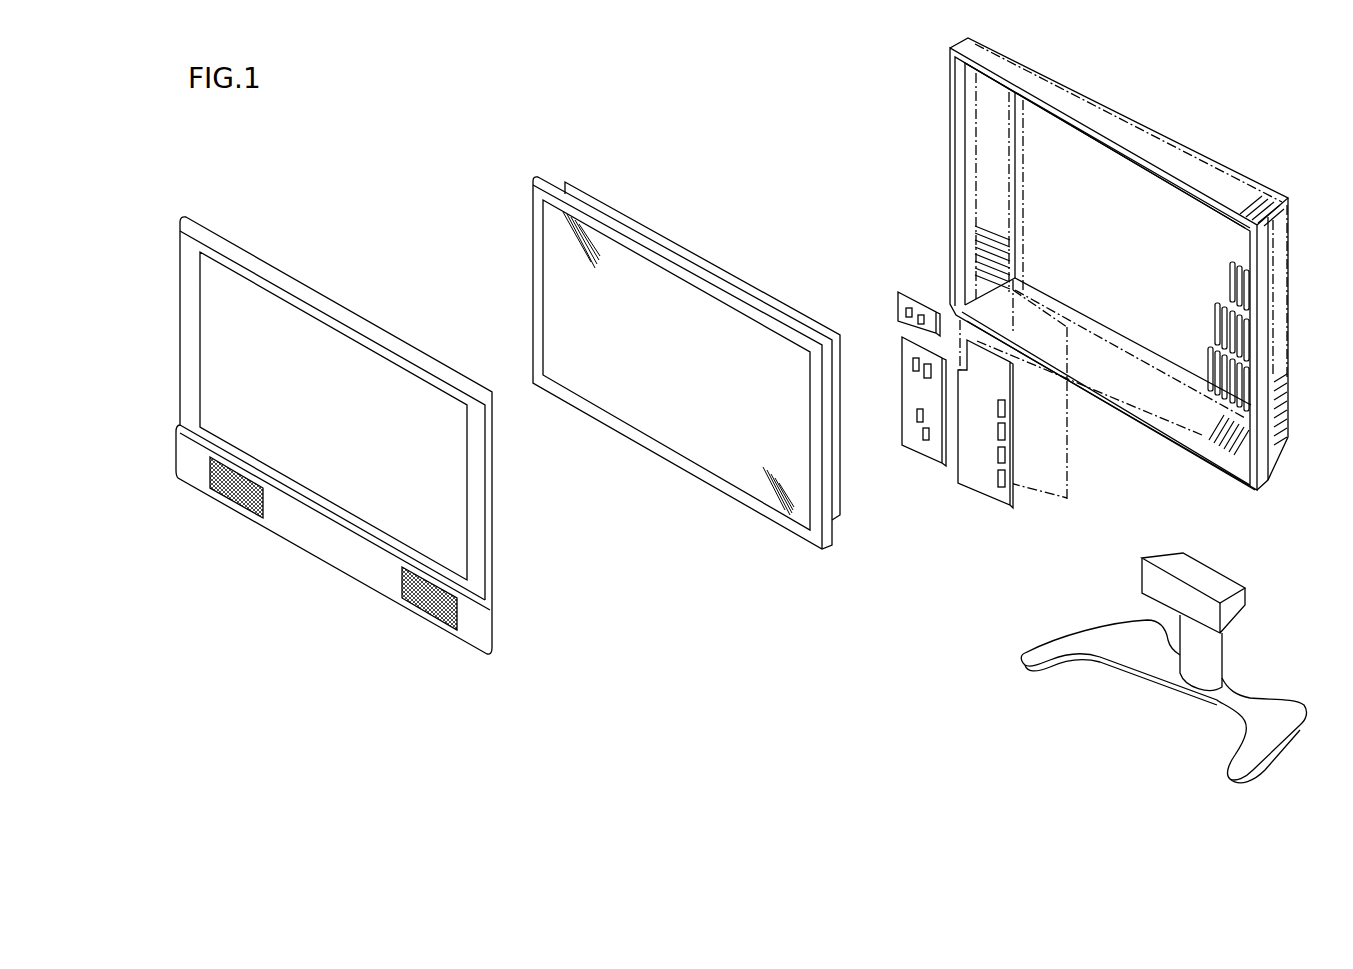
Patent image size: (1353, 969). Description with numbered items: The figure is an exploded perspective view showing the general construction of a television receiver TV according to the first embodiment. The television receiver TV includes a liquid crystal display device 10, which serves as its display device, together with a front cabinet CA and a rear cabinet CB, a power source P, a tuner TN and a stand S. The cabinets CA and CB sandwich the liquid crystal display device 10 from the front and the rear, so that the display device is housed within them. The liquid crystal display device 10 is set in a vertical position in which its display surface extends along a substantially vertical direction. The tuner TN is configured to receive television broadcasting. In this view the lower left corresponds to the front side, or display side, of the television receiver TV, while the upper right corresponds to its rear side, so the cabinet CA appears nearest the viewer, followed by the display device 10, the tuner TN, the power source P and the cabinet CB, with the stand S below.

The television receiver TV is at (709, 121).
The cabinet CA is at (318, 290).
The liquid crystal display device 10 is at (637, 217).
The cabinet CB is at (1115, 108).
The tuner TN is at (915, 452).
The power source P is at (980, 494).
The stand S is at (1083, 662).